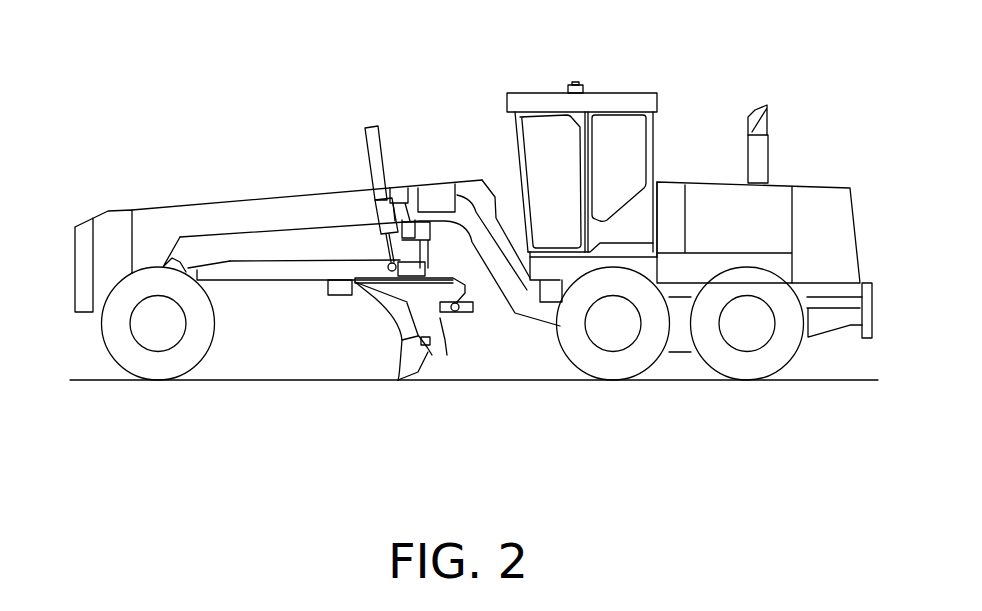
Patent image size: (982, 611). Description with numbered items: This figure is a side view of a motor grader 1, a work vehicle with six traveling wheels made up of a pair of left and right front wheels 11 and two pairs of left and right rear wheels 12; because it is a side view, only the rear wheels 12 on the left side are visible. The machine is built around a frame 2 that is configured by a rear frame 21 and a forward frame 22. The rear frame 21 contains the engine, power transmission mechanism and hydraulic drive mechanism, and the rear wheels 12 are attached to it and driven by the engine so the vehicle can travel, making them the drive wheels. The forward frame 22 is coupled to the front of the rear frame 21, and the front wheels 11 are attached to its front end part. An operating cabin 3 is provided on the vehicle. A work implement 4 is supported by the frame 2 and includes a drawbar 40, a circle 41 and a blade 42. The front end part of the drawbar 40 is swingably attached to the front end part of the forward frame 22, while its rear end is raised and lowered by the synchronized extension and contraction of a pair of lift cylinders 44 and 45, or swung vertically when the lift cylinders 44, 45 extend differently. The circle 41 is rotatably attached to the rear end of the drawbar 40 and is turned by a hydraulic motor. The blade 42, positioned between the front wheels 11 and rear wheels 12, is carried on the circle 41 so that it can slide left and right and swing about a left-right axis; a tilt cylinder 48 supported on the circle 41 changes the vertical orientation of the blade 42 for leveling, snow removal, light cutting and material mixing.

The motor grader 1 is at (280, 82).
The frame 2 is at (470, 157).
The operating cabin 3 is at (630, 93).
The work implement 4 is at (355, 362).
The front wheels 11 is at (153, 372).
The rear wheels 12 is at (613, 372).
The rear frame 21 is at (825, 318).
The forward frame 22 is at (243, 213).
The drawbar 40 is at (245, 280).
The circle 41 is at (340, 296).
The blade 42 is at (397, 358).
The lift cylinder 44 is at (383, 138).
The lift cylinder 45 is at (391, 252).
The tilt cylinder 48 is at (445, 313).